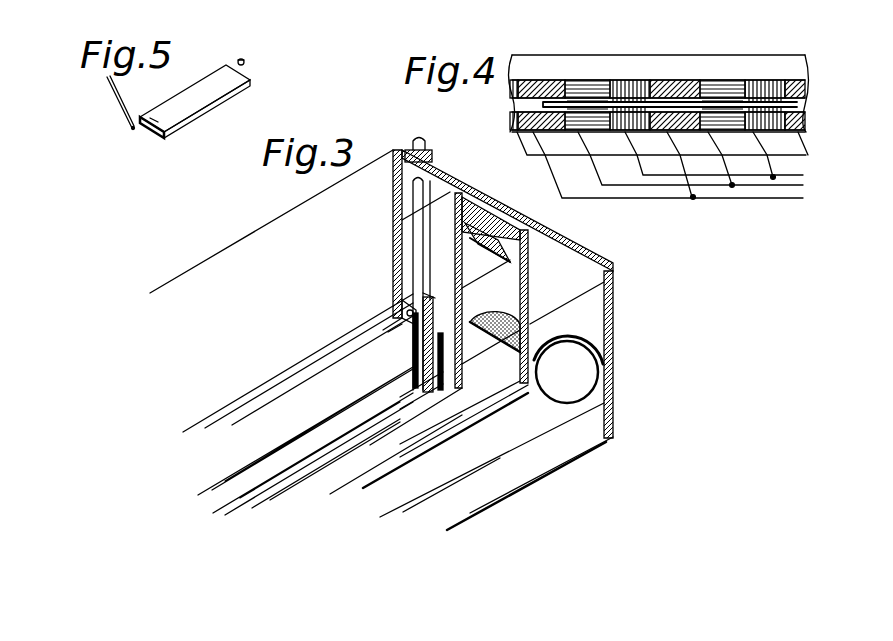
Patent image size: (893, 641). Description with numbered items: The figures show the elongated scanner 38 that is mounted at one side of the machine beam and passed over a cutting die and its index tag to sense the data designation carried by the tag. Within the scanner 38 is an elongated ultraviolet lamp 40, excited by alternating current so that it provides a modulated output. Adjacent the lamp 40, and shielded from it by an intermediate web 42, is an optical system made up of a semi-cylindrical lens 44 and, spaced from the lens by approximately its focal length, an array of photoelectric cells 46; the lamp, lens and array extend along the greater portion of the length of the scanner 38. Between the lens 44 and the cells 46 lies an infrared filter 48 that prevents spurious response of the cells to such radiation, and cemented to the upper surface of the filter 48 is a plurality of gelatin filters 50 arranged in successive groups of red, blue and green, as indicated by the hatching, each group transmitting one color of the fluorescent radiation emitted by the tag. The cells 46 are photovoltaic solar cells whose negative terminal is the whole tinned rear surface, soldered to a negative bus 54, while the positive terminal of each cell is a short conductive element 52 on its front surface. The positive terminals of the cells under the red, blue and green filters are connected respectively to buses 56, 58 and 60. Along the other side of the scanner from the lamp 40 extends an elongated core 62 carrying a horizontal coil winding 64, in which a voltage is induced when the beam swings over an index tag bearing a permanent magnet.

In FIG. 3, the scanner 38 is at (598, 268).
In FIG. 3, the ultraviolet lamp 40 is at (608, 405).
In FIG. 3, the intermediate web 42 is at (532, 330).
In FIG. 3, the semi-cylindrical lens 44 is at (530, 312).
In FIG. 5, the photoelectric cells 46 is at (206, 106).
In FIG. 4, the photoelectric cells 46 is at (533, 100).
In FIG. 3, the photoelectric cells 46 is at (497, 222).
In FIG. 4, the infrared filter 48 is at (525, 144).
In FIG. 3, the infrared filter 48 is at (492, 275).
In FIG. 4, the gelatin filters 50 is at (590, 83).
In FIG. 3, the gelatin filters 50 is at (516, 228).
In FIG. 5, the conductive element 52 is at (158, 140).
In FIG. 5, the negative bus 54 is at (242, 58).
In FIG. 4, the negative bus 54 is at (548, 103).
In FIG. 4, the bus 56 is at (783, 182).
In FIG. 4, the bus 58 is at (788, 198).
In FIG. 4, the bus 60 is at (801, 203).
In FIG. 3, the core 62 is at (405, 308).
In FIG. 3, the coil winding 64 is at (420, 335).